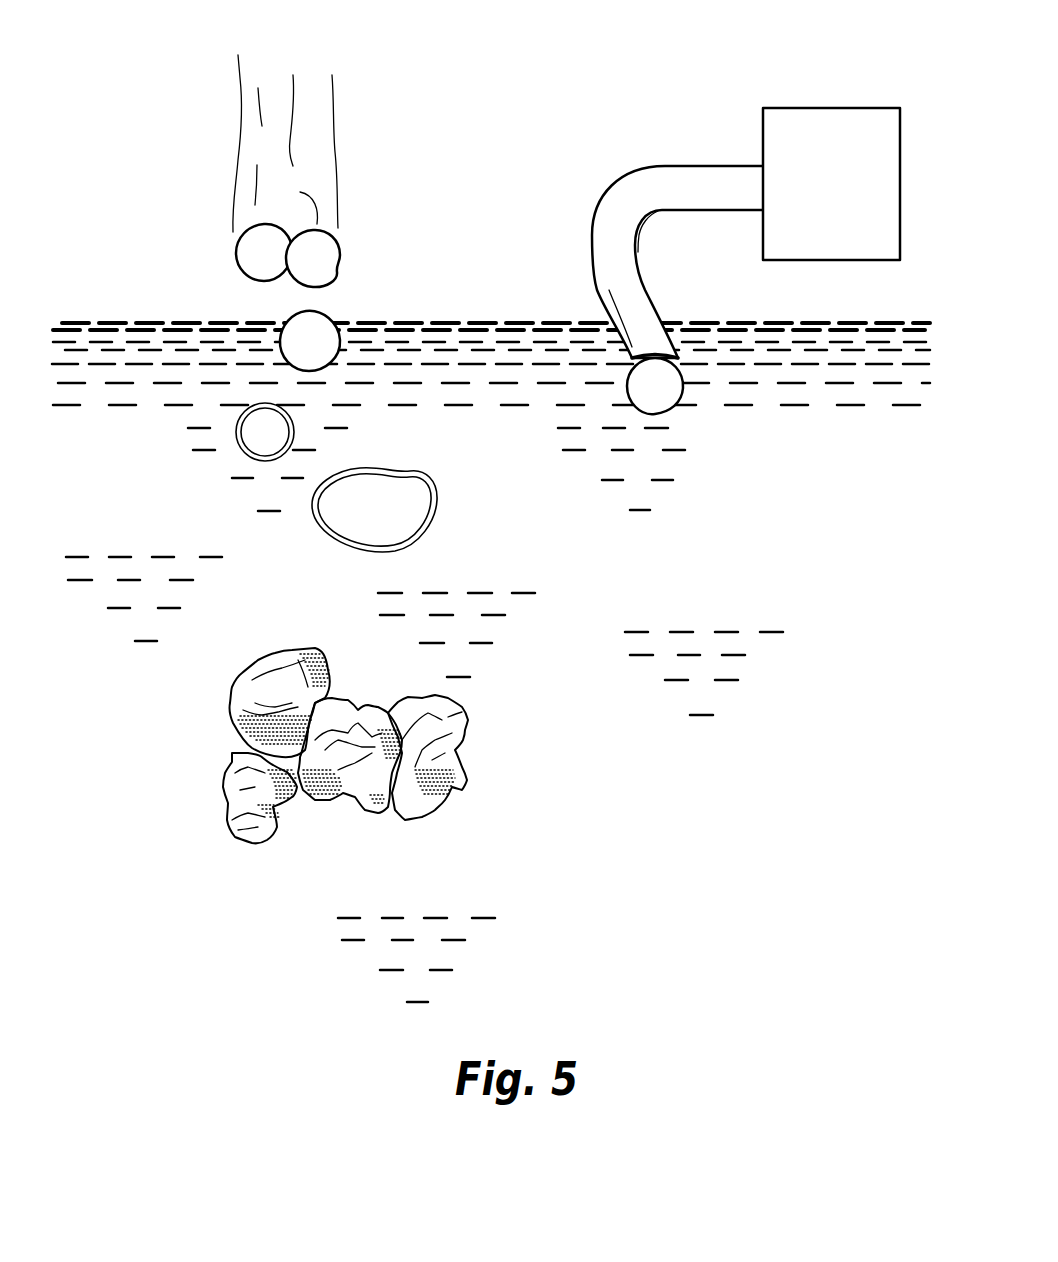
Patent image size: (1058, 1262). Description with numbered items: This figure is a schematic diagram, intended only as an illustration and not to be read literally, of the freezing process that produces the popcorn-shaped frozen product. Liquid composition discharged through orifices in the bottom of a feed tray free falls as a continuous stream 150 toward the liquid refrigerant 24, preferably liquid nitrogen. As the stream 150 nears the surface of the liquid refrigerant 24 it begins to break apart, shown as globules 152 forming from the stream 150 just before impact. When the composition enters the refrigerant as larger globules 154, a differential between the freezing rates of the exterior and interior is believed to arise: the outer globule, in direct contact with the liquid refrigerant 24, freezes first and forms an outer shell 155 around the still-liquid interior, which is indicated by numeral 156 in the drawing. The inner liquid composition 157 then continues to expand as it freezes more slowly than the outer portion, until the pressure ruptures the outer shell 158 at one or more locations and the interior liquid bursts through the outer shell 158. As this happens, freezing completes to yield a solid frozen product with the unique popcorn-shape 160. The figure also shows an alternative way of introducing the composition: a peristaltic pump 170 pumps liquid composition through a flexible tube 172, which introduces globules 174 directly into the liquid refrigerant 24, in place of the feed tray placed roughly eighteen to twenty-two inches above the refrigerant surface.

The liquid refrigerant 24 is at (106, 314).
The stream 150 is at (336, 131).
The globules 152 is at (340, 250).
The larger globules 154 is at (206, 402).
The outer shell 155 is at (206, 461).
The gas core 156 is at (253, 425).
The inner liquid composition 157 is at (386, 504).
The outer shell 158 is at (429, 490).
The popcorn-shape 160 is at (276, 673).
The peristaltic pump 170 is at (773, 112).
The flexible tube 172 is at (617, 205).
The globules 174 is at (672, 403).